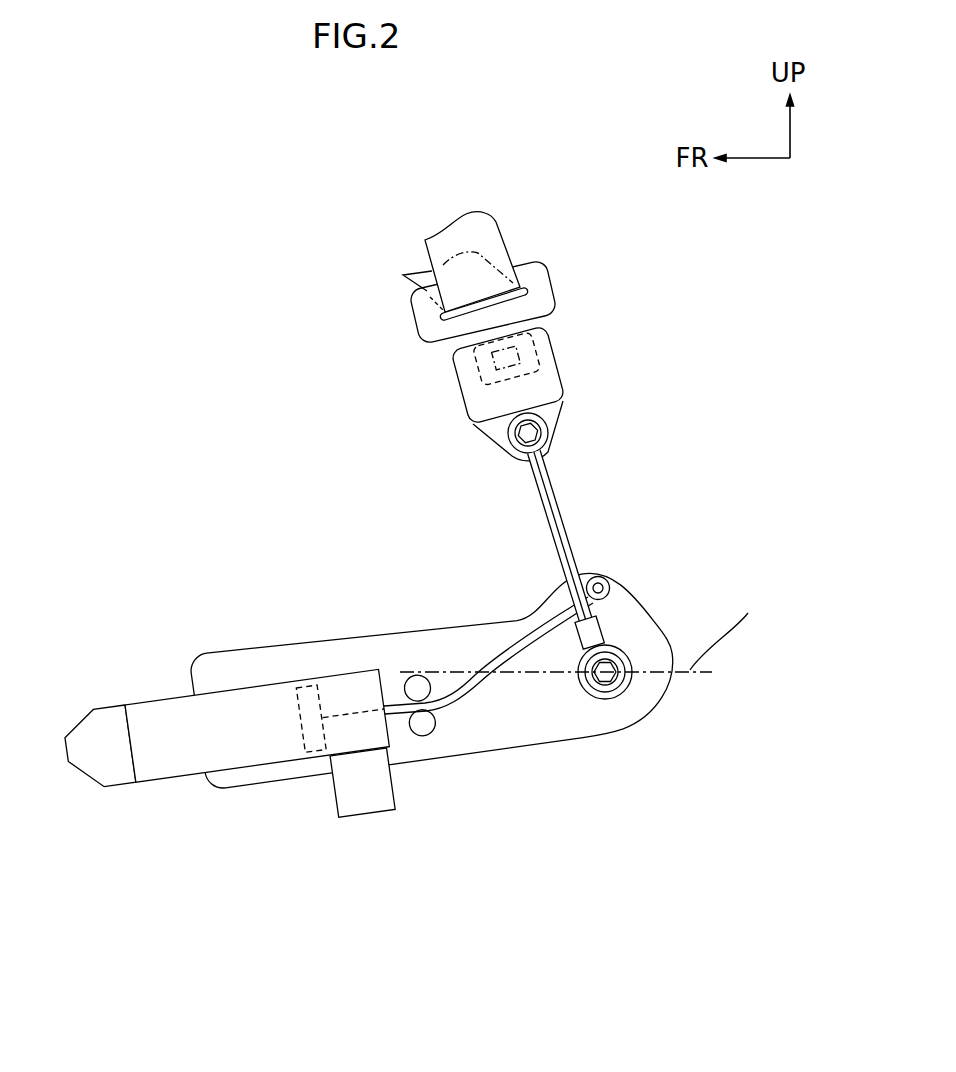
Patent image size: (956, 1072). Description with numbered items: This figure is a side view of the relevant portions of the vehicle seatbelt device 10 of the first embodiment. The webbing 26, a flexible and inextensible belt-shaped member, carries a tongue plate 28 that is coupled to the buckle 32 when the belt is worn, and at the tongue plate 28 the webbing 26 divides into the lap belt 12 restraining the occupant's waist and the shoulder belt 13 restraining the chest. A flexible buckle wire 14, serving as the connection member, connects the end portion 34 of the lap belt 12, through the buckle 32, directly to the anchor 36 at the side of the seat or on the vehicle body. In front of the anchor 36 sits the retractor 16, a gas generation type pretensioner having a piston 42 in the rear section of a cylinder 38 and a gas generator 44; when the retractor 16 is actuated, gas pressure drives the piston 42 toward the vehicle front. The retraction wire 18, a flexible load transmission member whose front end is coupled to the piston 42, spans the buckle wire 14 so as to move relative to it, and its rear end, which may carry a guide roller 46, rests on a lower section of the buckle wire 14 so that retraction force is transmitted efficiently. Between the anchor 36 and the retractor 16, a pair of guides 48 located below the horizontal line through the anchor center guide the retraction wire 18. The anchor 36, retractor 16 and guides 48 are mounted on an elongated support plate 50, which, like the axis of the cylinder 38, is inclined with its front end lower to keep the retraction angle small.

The vehicle seatbelt device 10 is at (150, 205).
The lap belt 12 is at (413, 283).
The shoulder belt 13 is at (422, 250).
The buckle wire 14 is at (562, 507).
The retractor 16 is at (237, 677).
The retraction wire 18 is at (512, 643).
The webbing 26 is at (298, 177).
The tongue plate 28 is at (548, 277).
The buckle 32 is at (556, 360).
The end portion of the lap belt 34 is at (650, 283).
The anchor 36 is at (601, 699).
The cylinder 38 is at (159, 699).
The piston 42 is at (297, 687).
The gas generator 44 is at (360, 818).
The guide roller 46 is at (613, 600).
The guides 48 is at (431, 690).
The support plate 50 is at (401, 631).